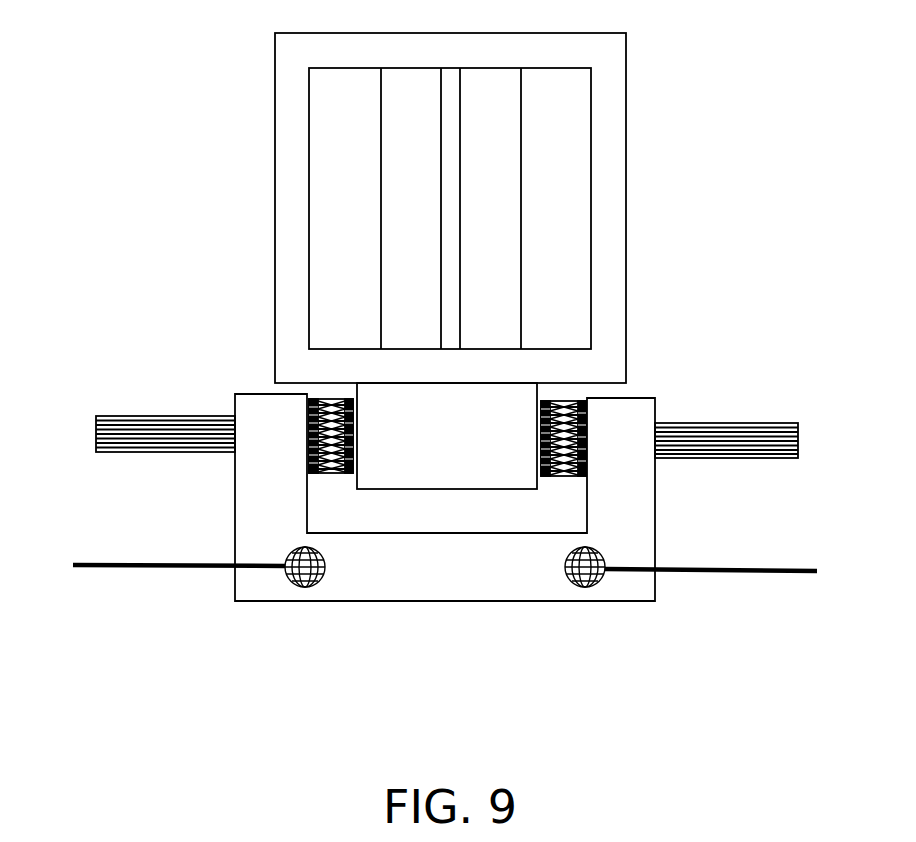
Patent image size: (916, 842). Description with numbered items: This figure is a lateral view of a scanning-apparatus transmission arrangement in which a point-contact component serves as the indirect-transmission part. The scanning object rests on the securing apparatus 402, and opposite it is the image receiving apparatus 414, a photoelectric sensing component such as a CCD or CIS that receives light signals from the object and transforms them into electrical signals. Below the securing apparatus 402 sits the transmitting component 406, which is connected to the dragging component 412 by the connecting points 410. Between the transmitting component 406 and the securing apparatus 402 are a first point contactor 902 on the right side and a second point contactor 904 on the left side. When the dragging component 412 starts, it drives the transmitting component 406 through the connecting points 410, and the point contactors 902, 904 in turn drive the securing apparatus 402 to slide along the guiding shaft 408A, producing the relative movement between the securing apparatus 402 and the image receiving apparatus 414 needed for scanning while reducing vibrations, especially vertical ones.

The securing apparatus 402 is at (610, 62).
The image receiving apparatus 414 is at (490, 173).
The transmitting component 406 is at (448, 583).
The first guiding shaft 408A is at (685, 432).
The connecting points 410 is at (580, 587).
The dragging component 412 is at (672, 572).
The first point contactor 902 is at (558, 470).
The second point contactor 904 is at (332, 473).